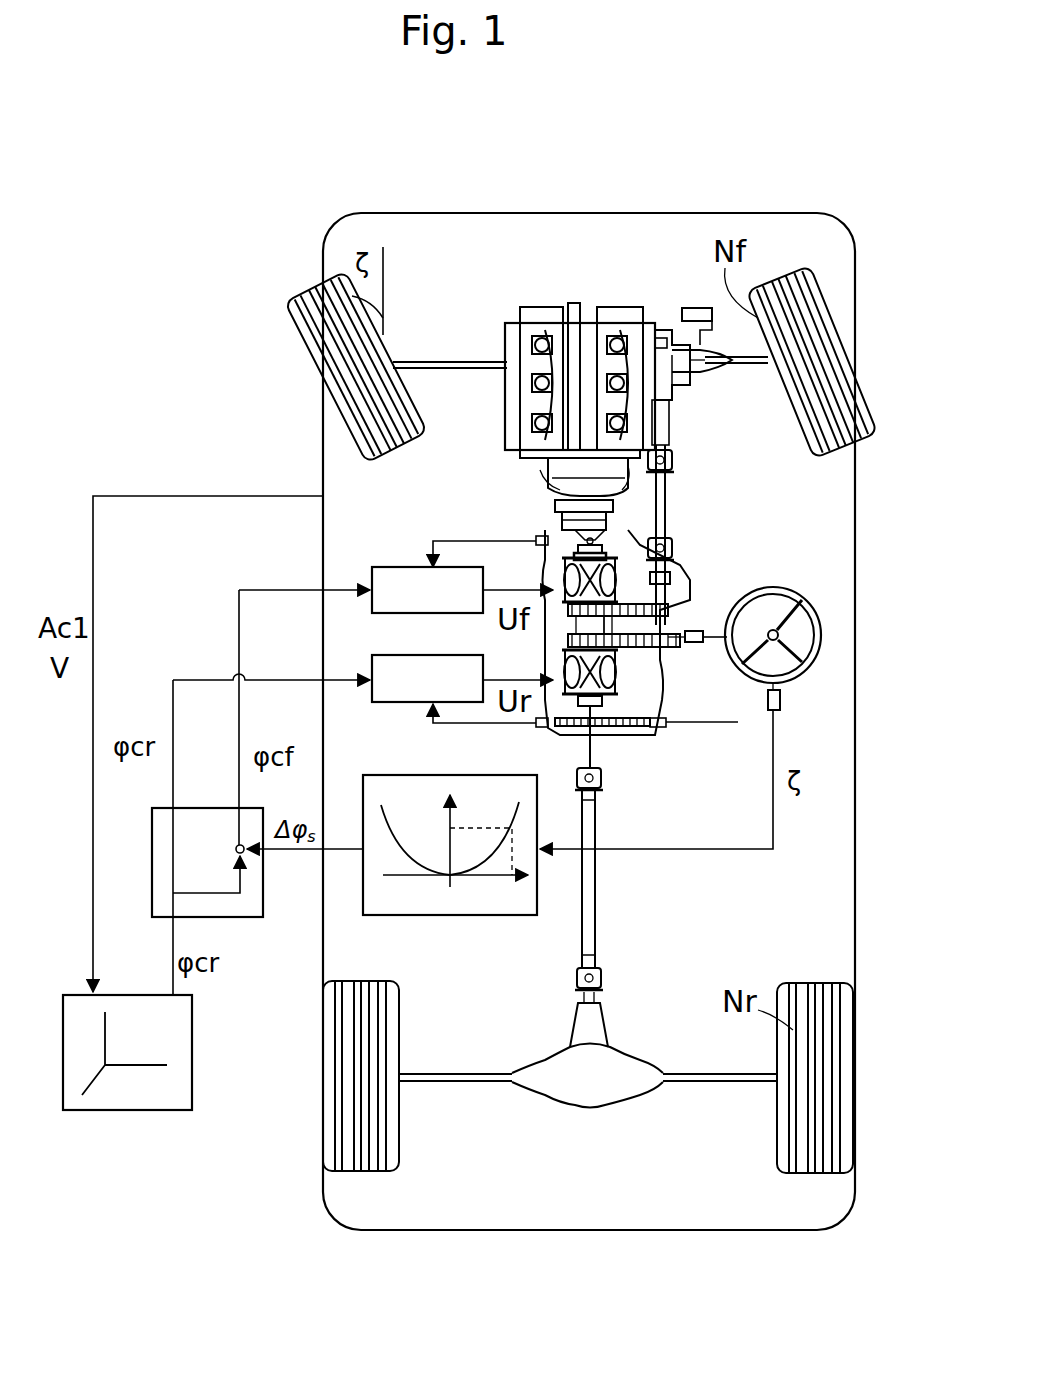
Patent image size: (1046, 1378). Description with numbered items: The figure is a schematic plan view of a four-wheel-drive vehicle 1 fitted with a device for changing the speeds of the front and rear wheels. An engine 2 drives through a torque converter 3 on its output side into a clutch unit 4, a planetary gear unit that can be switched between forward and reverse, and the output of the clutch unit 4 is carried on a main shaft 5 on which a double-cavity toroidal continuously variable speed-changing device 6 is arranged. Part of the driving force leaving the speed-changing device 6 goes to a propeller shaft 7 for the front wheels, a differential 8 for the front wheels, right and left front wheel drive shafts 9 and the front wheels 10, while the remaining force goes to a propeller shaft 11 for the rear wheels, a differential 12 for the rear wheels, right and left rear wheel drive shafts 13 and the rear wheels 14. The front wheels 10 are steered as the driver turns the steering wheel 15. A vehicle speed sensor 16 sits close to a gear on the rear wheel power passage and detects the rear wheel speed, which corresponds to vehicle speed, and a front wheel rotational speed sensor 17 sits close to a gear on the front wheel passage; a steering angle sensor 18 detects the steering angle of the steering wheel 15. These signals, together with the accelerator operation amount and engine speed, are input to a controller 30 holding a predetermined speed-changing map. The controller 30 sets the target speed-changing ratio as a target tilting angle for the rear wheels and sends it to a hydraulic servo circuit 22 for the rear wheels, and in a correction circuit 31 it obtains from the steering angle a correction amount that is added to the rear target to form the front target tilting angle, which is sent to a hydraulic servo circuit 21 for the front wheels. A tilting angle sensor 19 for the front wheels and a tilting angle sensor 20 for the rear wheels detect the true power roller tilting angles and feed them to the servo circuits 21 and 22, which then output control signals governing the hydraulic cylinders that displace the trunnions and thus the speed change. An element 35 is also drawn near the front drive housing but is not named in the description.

The four-wheel-drive vehicle 1 is at (722, 135).
The engine 2 is at (586, 305).
The torque converter 3 is at (550, 476).
The clutch unit 4 is at (554, 520).
The main shaft 5 is at (576, 552).
The continuously variable speed-changing device 6 is at (540, 628).
The propeller shaft for driving the front wheels 7 is at (668, 500).
The differential for the front wheels 8 is at (657, 336).
The front wheel drive shafts 9 is at (447, 361).
The front wheels 10 is at (284, 327).
The propeller shaft for driving the rear wheels 11 is at (597, 896).
The differential for the rear wheels 12 is at (609, 1090).
The rear wheel drive shafts 13 is at (455, 1084).
The rear wheels 14 is at (346, 1132).
The steering wheel 15 is at (810, 608).
The vehicle speed sensor 16 is at (668, 730).
The front wheel rotational speed sensor 17 is at (694, 644).
The steering angle sensor 18 is at (782, 704).
The tilting angle sensor for the front wheels 19 is at (536, 538).
The tilting angle sensor for the rear wheels 20 is at (538, 727).
The hydraulic servo circuit for the front wheels 21 is at (390, 566).
The hydraulic servo circuit for the rear wheels 22 is at (390, 703).
The controller 30 is at (193, 1038).
The correction circuit 31 is at (476, 917).
The transfer clutch actuator 35 is at (690, 338).